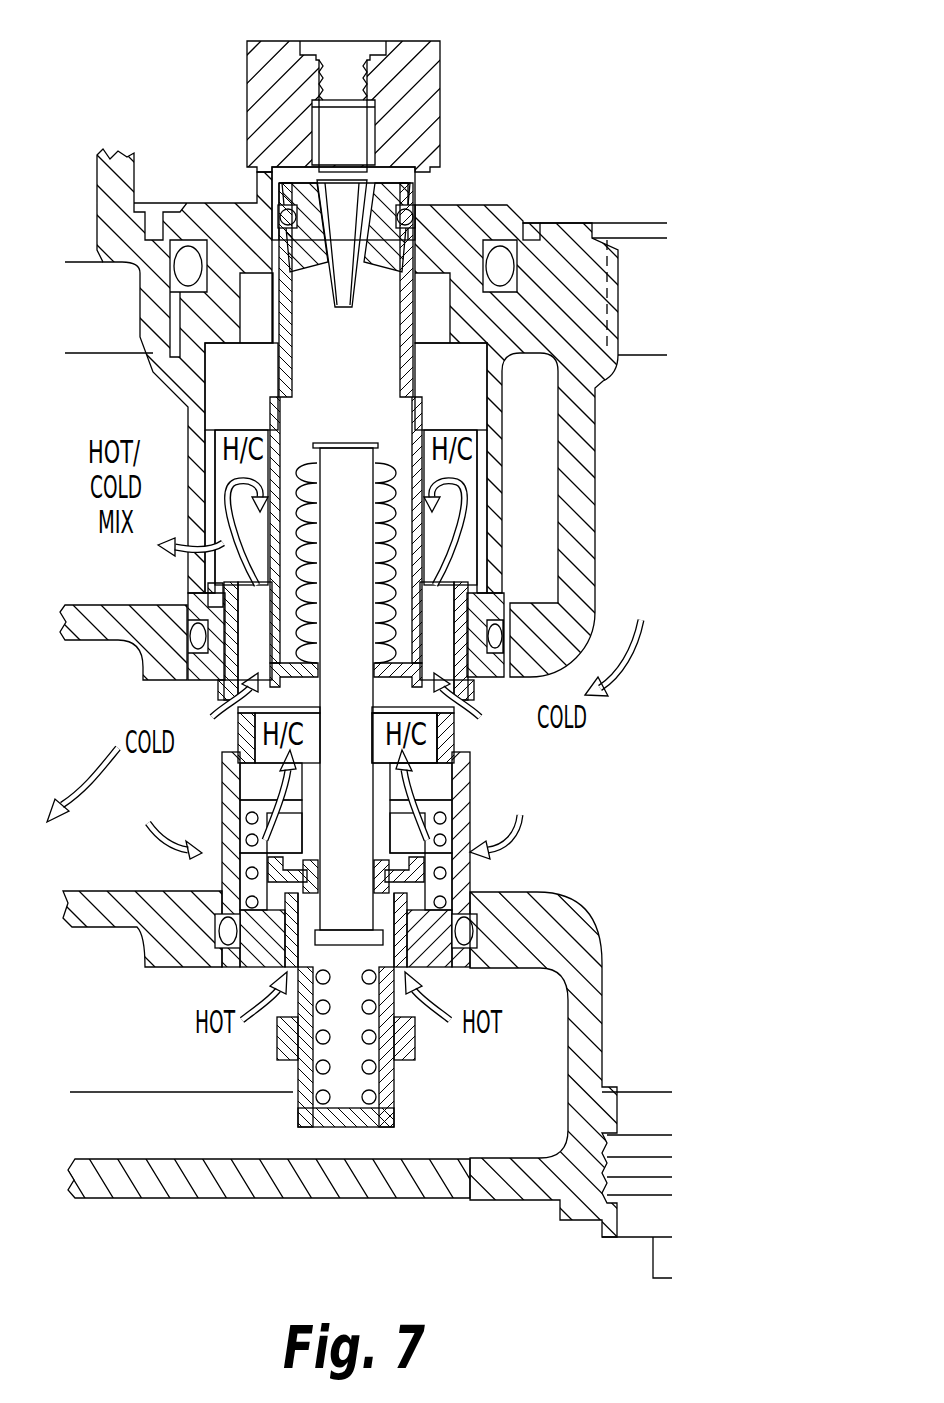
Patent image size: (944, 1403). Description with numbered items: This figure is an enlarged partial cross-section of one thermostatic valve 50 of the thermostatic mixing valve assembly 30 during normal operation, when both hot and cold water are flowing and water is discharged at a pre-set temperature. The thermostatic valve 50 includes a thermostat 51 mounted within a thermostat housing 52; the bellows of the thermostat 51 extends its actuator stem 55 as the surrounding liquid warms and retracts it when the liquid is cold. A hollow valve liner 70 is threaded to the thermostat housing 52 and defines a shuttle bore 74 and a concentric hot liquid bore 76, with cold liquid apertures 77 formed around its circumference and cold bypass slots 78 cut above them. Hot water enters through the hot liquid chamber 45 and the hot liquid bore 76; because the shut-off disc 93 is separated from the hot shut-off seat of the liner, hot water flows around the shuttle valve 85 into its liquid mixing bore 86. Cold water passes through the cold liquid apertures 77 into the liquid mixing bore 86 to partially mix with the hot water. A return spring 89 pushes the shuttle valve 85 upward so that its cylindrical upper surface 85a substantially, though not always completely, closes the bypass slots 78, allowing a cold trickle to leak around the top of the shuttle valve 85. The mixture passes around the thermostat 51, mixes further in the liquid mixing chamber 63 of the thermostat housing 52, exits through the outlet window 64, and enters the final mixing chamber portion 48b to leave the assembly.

The thermostatic mixing valve assembly 30 is at (555, 218).
The hot liquid chamber 45 is at (163, 1073).
The mixing chamber portion 48b is at (133, 578).
The thermostatic valve 50 is at (448, 83).
The thermostat 51 is at (417, 232).
The thermostat housing 52 is at (188, 440).
The actuator stem 55 is at (345, 478).
The liquid mixing chamber 63 is at (255, 403).
The outlet window 64 is at (430, 440).
The valve liner 70 is at (470, 882).
The shuttle bore 74 is at (268, 628).
The hot liquid bore 76 is at (407, 963).
The cold liquid apertures 77 is at (478, 857).
The cold bypass slots 78 is at (225, 710).
The shuttle valve 85 is at (240, 745).
The upper surface 85a is at (457, 745).
The liquid mixing bore 86 is at (413, 758).
The return spring 89 is at (292, 890).
The shut-off disc 93 is at (222, 878).